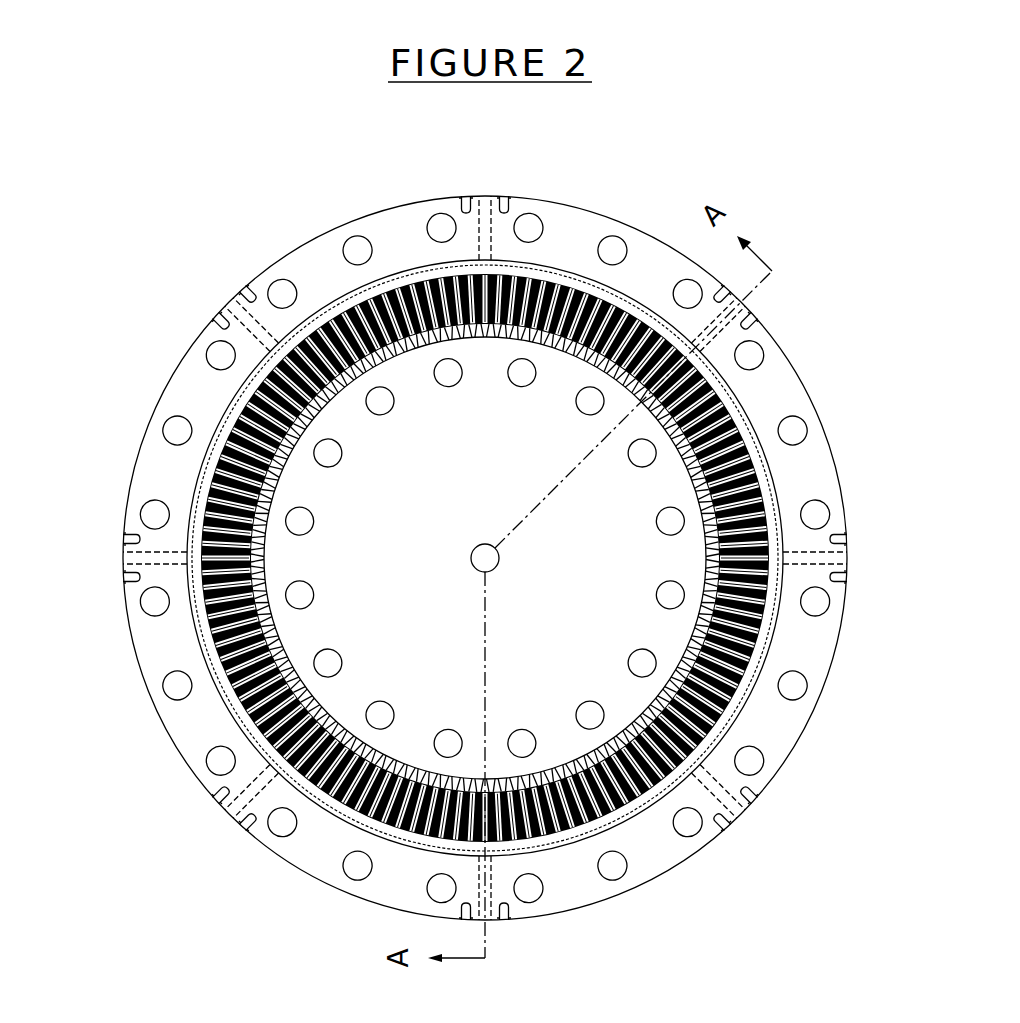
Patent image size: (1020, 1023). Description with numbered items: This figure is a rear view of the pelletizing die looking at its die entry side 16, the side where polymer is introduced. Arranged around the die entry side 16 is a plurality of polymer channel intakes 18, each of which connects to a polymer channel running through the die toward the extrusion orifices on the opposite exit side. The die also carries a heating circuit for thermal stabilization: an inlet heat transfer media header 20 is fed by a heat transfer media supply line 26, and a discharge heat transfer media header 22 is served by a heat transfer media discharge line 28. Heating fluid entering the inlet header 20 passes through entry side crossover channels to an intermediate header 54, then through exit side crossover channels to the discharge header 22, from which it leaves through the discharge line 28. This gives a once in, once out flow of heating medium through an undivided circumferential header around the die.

The die entry side 16 is at (778, 725).
The polymer channel intakes 18 is at (745, 392).
The inlet heat transfer media header 20 is at (812, 388).
The discharge heat transfer media header 22 is at (745, 402).
The heat transfer media supply line 26 is at (227, 310).
The heat transfer media discharge line 28 is at (145, 548).
The intermediate header 54 is at (305, 638).